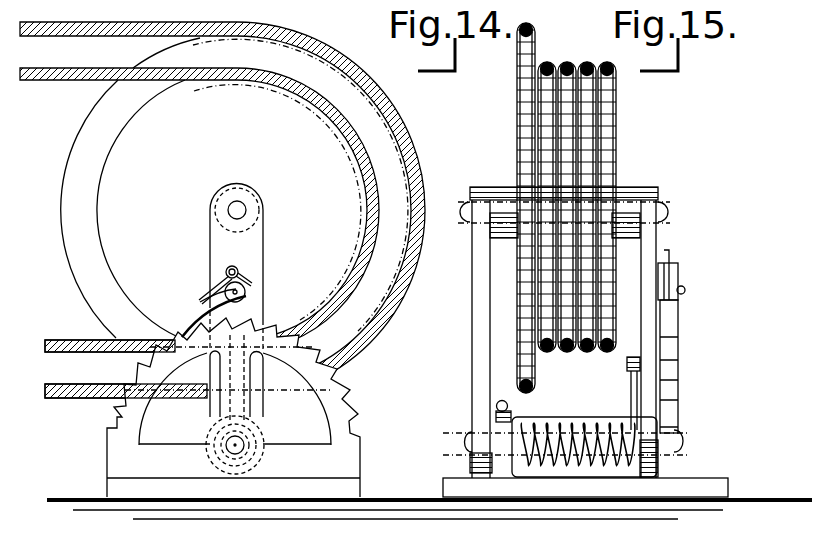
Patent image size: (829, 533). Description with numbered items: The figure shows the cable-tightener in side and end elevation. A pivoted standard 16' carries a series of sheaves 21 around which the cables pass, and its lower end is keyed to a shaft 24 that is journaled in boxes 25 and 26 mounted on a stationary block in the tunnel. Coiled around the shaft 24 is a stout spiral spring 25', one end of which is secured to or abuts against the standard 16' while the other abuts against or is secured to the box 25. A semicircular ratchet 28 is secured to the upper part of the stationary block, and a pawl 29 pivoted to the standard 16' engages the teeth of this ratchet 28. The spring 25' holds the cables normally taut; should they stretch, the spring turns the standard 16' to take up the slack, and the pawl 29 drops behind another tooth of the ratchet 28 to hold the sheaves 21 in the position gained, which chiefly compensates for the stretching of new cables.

In FIG. 14, the sheaves 21 is at (222, 210).
In FIG. 15, the sheaves 21 is at (517, 135).
In FIG. 14, the standard 16' is at (255, 302).
In FIG. 14, the pawl 29 is at (241, 292).
In FIG. 14, the semicircular ratchet 28 is at (340, 384).
In FIG. 15, the semicircular ratchet 28 is at (672, 347).
In FIG. 14, the box 26 is at (258, 432).
In FIG. 14, the shaft 24 is at (240, 445).
In FIG. 15, the shaft 24 is at (679, 436).
In FIG. 15, the box 25 is at (518, 410).
In FIG. 15, the spiral spring 25' is at (599, 393).